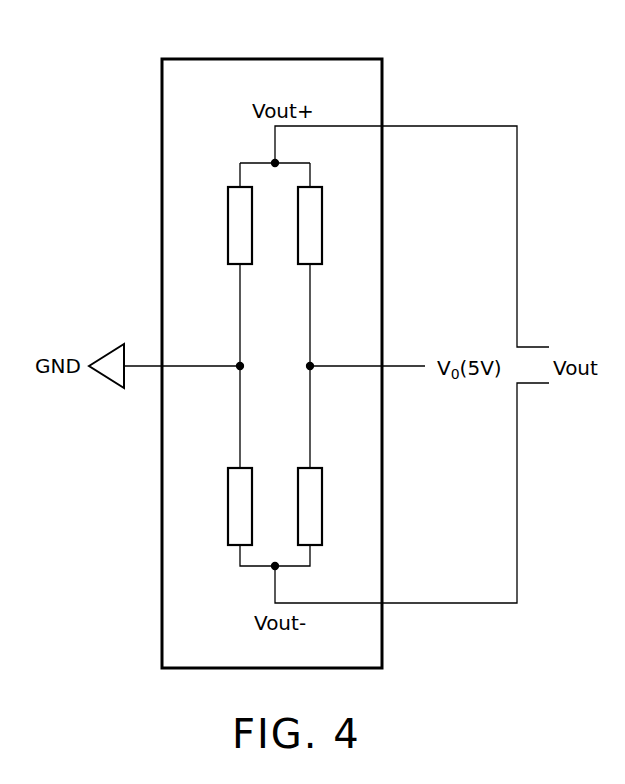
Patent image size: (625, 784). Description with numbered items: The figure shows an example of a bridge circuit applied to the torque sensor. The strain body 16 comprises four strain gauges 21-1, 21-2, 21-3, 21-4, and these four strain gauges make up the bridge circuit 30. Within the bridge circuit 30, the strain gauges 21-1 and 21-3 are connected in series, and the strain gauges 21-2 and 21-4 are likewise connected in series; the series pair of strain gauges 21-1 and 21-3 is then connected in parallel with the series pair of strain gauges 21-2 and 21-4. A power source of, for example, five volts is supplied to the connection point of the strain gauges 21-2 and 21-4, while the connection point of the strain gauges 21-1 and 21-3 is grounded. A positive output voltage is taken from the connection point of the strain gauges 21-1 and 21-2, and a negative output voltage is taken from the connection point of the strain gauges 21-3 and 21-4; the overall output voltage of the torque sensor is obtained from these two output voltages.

The strain body 16 is at (383, 78).
The bridge circuit 30 is at (277, 327).
The strain gauge 21-1 is at (228, 228).
The strain gauge 21-2 is at (322, 228).
The strain gauge 21-3 is at (228, 505).
The strain gauge 21-4 is at (322, 505).